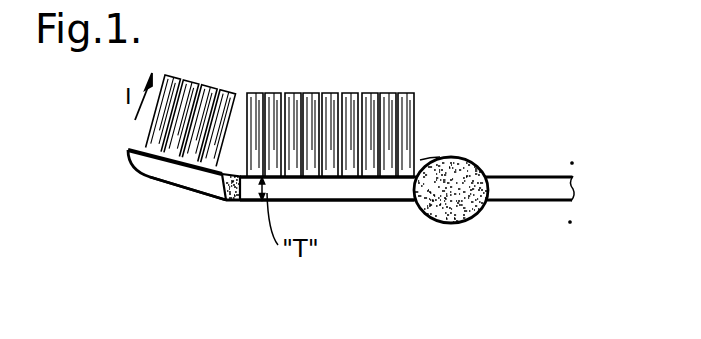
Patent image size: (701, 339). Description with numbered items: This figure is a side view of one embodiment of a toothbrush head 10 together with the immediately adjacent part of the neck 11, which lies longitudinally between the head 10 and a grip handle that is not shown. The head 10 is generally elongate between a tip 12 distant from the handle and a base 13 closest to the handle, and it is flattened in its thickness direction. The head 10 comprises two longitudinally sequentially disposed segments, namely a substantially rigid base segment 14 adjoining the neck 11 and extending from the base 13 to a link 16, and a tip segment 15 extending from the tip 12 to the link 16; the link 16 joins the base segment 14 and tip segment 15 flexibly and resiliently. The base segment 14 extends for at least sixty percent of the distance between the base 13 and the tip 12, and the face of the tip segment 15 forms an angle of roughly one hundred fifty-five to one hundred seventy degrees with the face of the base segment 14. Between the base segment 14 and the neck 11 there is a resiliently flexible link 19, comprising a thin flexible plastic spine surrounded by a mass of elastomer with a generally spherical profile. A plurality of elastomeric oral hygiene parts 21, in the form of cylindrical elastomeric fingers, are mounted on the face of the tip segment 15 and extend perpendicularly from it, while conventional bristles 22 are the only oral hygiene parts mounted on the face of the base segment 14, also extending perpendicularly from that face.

The toothbrush head 10 is at (173, 222).
The neck 11 is at (525, 193).
The tip 12 is at (127, 148).
The base 13 is at (420, 160).
The base segment 14 is at (363, 193).
The tip segment 15 is at (158, 167).
The link 16 is at (230, 202).
The resiliently flexible link 19 is at (447, 221).
The elastomeric oral hygiene parts 21 is at (195, 80).
The bristles 22 is at (347, 98).